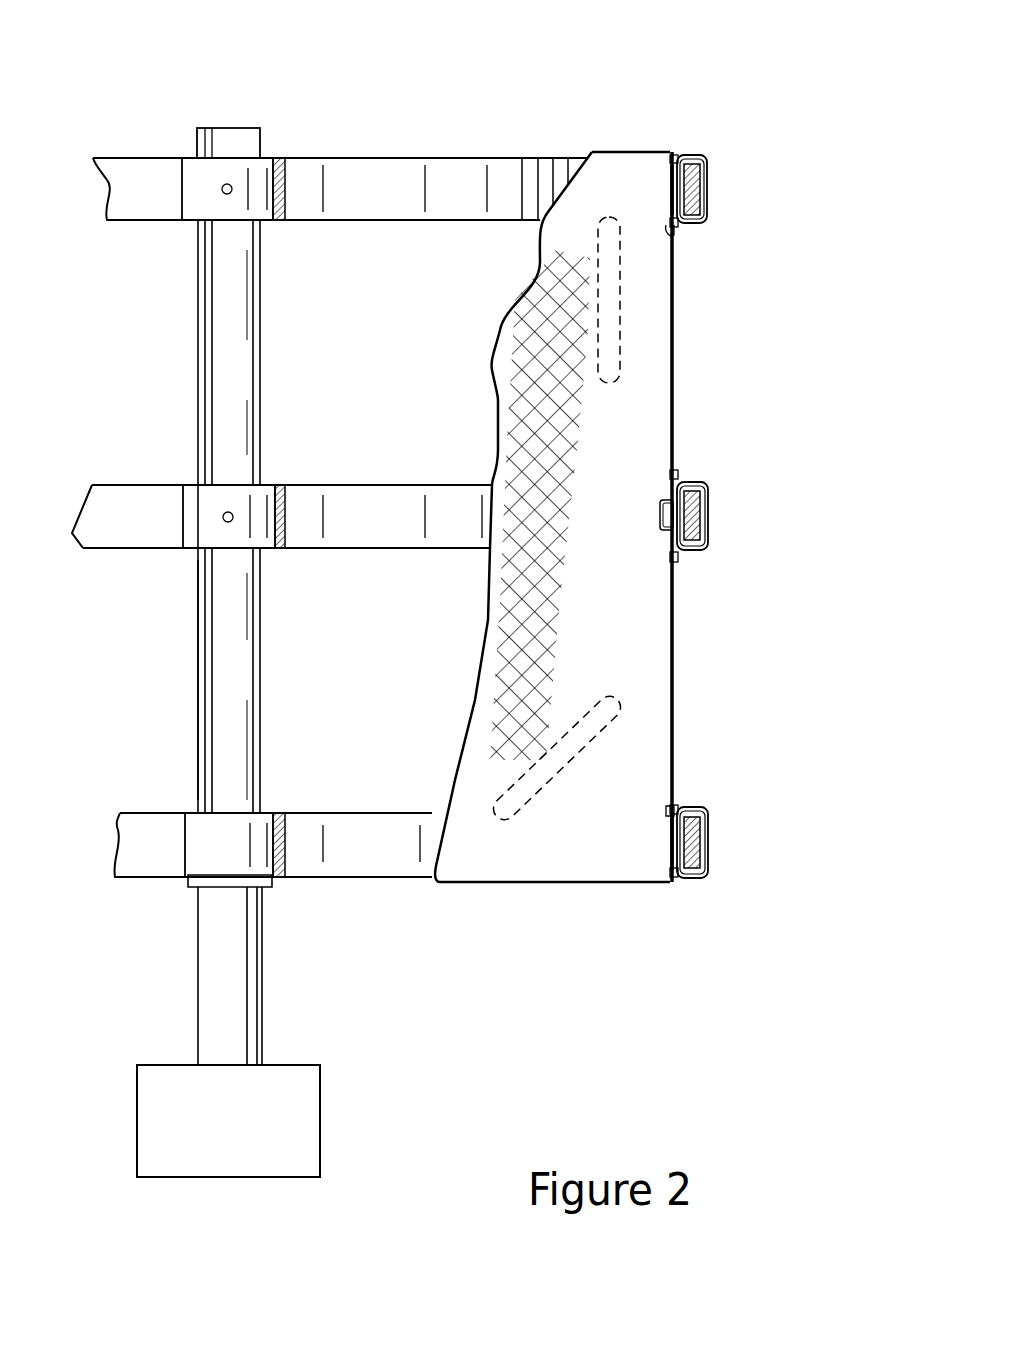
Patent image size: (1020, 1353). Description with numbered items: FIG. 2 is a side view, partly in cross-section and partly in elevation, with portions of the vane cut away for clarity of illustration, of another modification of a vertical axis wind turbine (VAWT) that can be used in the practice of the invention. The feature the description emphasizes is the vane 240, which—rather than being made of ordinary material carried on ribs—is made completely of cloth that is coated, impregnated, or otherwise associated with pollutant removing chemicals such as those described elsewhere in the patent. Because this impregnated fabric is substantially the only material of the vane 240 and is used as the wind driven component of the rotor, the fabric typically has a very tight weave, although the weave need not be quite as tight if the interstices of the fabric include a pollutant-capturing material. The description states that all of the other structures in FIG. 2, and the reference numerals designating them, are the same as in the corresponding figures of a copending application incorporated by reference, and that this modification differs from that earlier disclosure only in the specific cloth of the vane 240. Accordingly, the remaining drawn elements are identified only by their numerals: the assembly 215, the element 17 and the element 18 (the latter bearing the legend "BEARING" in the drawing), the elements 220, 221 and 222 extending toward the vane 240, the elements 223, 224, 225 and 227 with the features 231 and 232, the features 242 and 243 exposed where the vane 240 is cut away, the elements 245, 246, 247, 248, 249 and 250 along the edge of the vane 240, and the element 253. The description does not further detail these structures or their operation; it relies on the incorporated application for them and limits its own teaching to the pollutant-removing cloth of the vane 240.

The gate assembly 215 is at (678, 94).
The shaft 17 is at (223, 287).
The bearing 18 is at (305, 1100).
The upper arm 220 is at (350, 146).
The middle arm 221 is at (305, 470).
The lower arm 222 is at (310, 790).
The clip 223 is at (707, 165).
The collar 224 is at (283, 535).
The arm tube 225 is at (72, 517).
The hub 227 is at (200, 172).
The hole 231 is at (222, 189).
The hole 232 is at (228, 522).
The vane 240 is at (748, 388).
The vertical slot 242 is at (607, 350).
The diagonal slot 243 is at (607, 697).
The upper edge portion 245 is at (670, 210).
The lower edge portion 246 is at (673, 803).
The tab 247 is at (672, 235).
The latch tab 248 is at (660, 515).
The clip insert 249 is at (708, 503).
The fastener 250 is at (679, 474).
The shaft section 253 is at (205, 712).